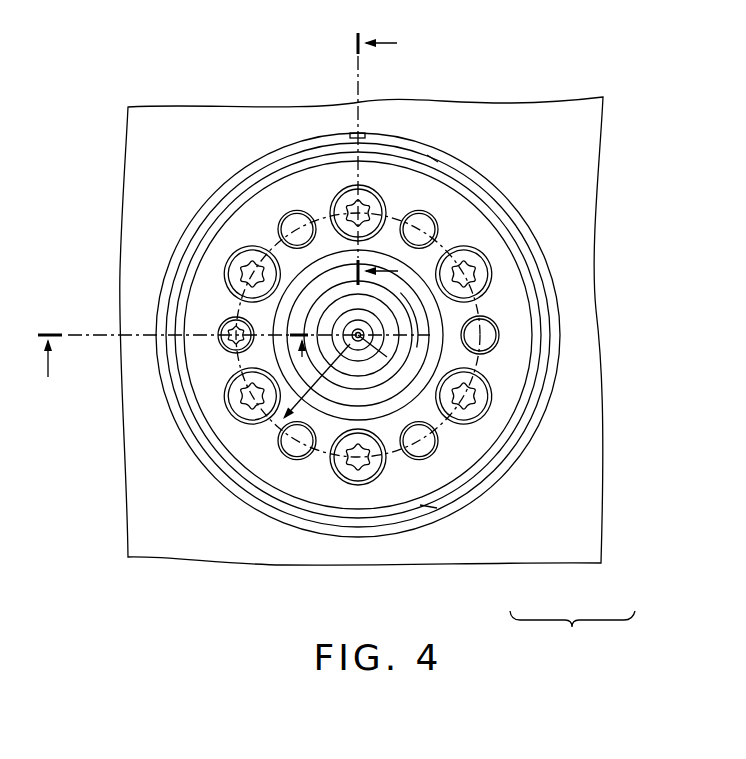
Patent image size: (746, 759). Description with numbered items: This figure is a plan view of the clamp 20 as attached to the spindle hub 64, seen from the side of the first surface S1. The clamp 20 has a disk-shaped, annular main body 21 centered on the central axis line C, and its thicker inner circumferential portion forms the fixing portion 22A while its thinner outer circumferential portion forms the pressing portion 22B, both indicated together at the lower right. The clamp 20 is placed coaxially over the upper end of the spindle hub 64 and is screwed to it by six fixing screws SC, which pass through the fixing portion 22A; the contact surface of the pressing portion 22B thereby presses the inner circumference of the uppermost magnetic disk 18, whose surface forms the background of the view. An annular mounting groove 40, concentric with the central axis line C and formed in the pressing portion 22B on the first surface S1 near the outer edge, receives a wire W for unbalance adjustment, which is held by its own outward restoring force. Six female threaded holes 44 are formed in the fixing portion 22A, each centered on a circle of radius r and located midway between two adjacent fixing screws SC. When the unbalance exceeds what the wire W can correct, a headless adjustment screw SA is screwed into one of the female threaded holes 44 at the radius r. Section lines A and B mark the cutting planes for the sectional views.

The magnetic disk 18 is at (600, 162).
The clamp 20 is at (468, 217).
The main body 21 is at (572, 632).
The fixing portion 22A is at (518, 454).
The pressing portion 22B is at (523, 462).
The mounting groove 40 is at (537, 282).
The female threaded holes 44 is at (288, 209).
The spindle hub 64 is at (420, 342).
The first surface S1 is at (248, 217).
The adjustment screw SA is at (223, 323).
The fixing screws SC is at (369, 196).
The wire W is at (295, 138).
The radius r is at (283, 425).
The section A is at (172, 356).
The section B is at (378, 155).
The central axis line C is at (388, 332).